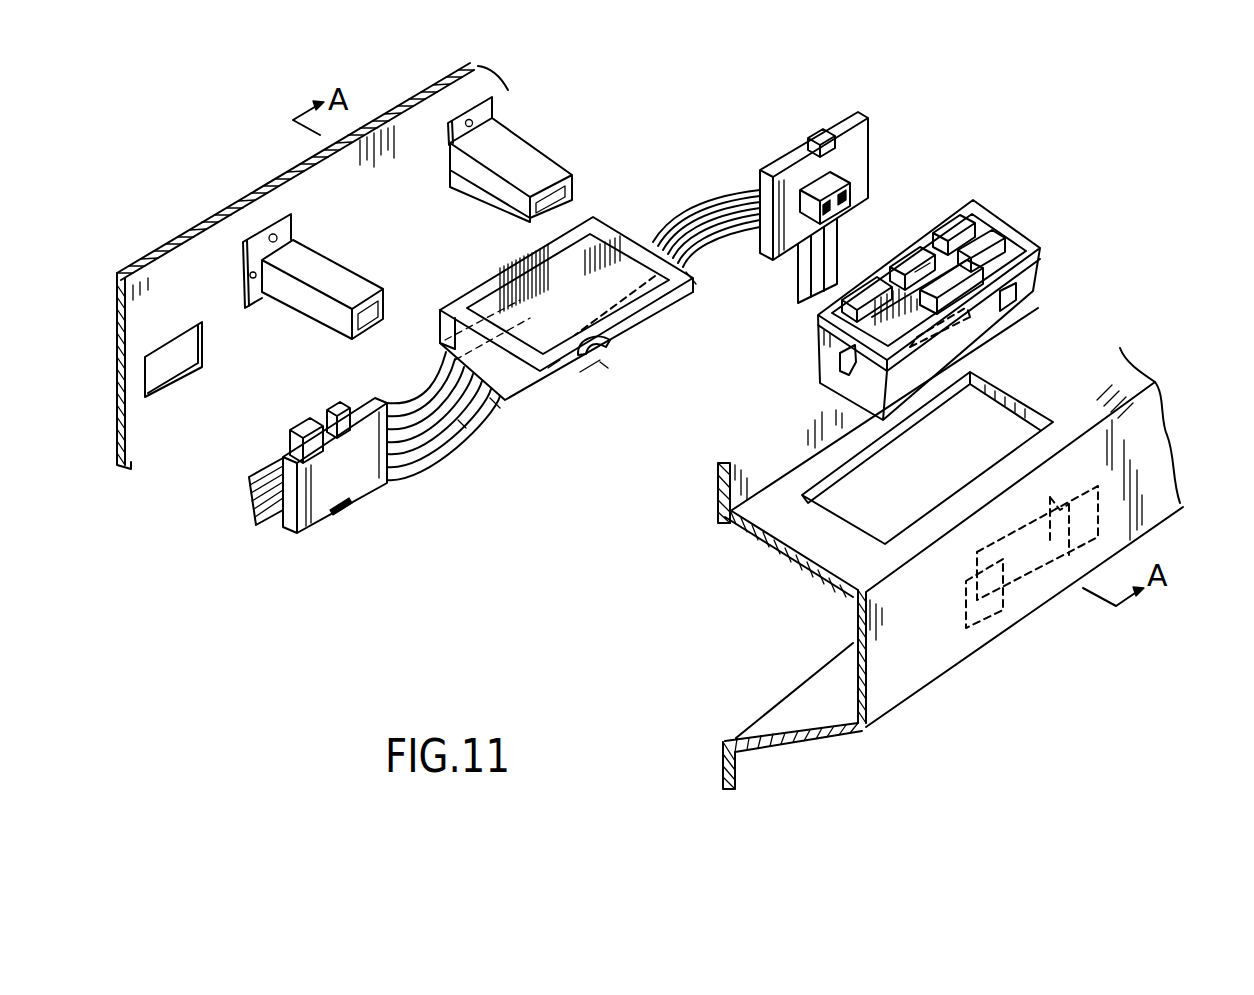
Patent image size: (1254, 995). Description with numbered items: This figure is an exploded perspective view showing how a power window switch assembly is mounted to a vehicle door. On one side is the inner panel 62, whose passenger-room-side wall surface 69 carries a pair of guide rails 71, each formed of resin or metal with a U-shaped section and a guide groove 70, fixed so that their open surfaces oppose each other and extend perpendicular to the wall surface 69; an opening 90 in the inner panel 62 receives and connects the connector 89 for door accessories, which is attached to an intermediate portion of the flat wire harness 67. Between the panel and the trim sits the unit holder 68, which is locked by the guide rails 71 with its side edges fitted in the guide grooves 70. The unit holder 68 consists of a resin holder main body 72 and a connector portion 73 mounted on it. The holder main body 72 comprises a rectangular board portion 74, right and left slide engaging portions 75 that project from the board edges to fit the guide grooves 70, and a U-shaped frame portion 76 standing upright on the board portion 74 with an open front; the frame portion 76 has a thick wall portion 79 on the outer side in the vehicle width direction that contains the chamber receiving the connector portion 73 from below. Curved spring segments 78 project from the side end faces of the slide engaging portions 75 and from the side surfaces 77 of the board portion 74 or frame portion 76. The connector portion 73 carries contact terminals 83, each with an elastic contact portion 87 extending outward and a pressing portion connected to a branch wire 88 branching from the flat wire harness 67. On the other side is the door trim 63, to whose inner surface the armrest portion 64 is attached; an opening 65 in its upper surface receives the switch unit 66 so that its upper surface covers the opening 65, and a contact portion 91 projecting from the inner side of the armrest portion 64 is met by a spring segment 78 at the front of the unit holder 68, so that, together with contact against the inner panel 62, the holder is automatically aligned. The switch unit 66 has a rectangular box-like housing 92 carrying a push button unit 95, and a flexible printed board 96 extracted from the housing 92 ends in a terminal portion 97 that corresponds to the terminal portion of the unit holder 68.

The inner panel 62 is at (278, 170).
The wall surface 69 is at (222, 210).
The opening 90 is at (186, 368).
The guide rails 71 is at (322, 257).
The guide groove 70 is at (378, 310).
The unit holder 68 is at (560, 317).
The frame portion 76 is at (620, 233).
The thick wall portion 79 is at (460, 305).
The board portion 74 is at (445, 358).
The branch wire 88 is at (440, 342).
The connector portion 73 is at (612, 302).
The holder main body 72 is at (663, 300).
The contact terminals 83 is at (605, 350).
The elastic contact portion 87 is at (553, 373).
The side surfaces 77 is at (590, 372).
The slide engaging portions 75 is at (693, 279).
The spring segments 78 is at (687, 268).
The flat wire harness 67 is at (708, 208).
The connector 89 is at (870, 138).
The switch unit 66 is at (967, 283).
The housing 92 is at (1040, 282).
The push button unit 95 is at (993, 243).
The terminal portion 97 is at (917, 272).
The flexible printed board 96 is at (915, 354).
The door trim 63 is at (710, 498).
The armrest portion 64 is at (1157, 383).
The opening 65 is at (1010, 405).
The contact portion 91 is at (1017, 555).